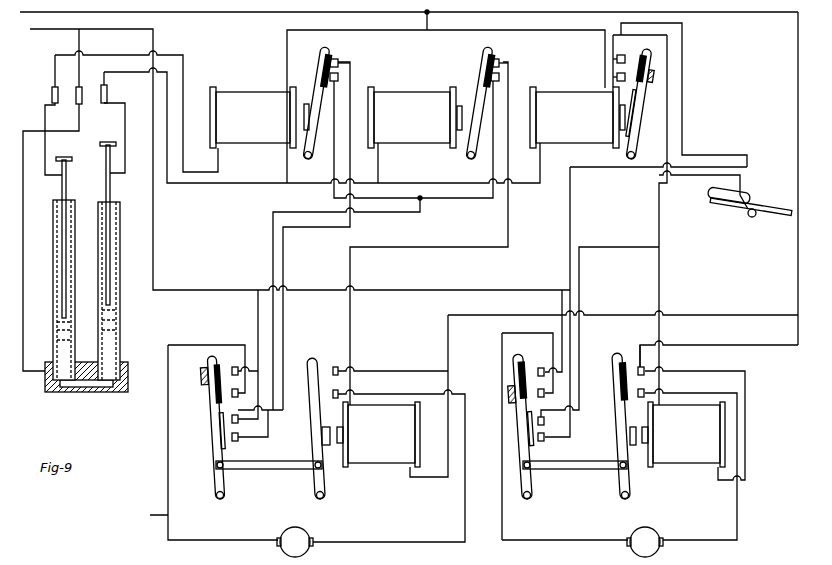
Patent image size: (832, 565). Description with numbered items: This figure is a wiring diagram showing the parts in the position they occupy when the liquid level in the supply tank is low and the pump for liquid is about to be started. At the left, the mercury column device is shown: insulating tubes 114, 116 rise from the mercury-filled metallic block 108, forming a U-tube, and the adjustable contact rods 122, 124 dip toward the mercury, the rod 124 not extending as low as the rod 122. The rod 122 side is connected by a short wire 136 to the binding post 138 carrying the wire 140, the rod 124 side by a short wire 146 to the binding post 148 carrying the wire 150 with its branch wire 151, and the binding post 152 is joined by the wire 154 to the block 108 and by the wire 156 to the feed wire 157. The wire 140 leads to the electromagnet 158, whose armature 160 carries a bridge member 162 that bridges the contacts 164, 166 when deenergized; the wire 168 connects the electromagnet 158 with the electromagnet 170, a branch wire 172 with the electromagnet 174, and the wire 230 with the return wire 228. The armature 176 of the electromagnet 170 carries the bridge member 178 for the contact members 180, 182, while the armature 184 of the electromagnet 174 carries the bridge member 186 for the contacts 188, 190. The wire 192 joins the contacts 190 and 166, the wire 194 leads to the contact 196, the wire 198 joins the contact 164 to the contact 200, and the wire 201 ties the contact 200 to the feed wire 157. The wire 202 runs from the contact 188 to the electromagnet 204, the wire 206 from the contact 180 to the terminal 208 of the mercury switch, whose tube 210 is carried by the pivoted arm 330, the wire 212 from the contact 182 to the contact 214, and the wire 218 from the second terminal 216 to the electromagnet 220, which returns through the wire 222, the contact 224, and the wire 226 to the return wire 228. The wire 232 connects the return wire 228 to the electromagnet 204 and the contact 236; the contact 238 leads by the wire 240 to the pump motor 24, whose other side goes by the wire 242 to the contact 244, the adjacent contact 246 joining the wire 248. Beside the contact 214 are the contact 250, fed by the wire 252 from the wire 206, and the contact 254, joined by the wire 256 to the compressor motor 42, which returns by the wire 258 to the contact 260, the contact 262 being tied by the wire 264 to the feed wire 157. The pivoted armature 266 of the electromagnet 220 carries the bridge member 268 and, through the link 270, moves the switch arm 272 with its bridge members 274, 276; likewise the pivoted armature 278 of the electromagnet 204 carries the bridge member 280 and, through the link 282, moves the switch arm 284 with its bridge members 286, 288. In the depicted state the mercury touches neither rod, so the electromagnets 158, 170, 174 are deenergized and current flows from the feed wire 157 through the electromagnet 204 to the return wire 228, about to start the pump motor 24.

The pump motor 24 is at (307, 552).
The compressor motor 42 is at (649, 553).
The metallic block 108 is at (120, 389).
The tube 114 is at (54, 319).
The tube 116 is at (121, 316).
The contact rod 122 is at (62, 262).
The contact rod 124 is at (110, 276).
The wire 136 is at (46, 146).
The binding post 138 is at (52, 92).
The wire 140 is at (181, 60).
The wire 146 is at (106, 142).
The binding post 148 is at (107, 91).
The wire 150 is at (229, 184).
The branch wire 151 is at (379, 169).
The binding post 152 is at (80, 86).
The wire 154 is at (23, 131).
The wire 156 is at (81, 43).
The feed wire 157 is at (41, 30).
The electromagnet 158 is at (241, 100).
The armature 160 is at (318, 62).
The bridge member 162 is at (328, 52).
The contact 164 is at (339, 61).
The contact 166 is at (339, 76).
The wire 168 is at (558, 31).
The electromagnet 170 is at (551, 100).
The branch wire 172 is at (447, 56).
The electromagnet 174 is at (392, 100).
The armature 176 is at (641, 110).
The bridge member 178 is at (639, 58).
The contact member 180 is at (617, 58).
The contact member 182 is at (617, 77).
The armature 184 is at (479, 95).
The bridge member 186 is at (490, 54).
The contact 188 is at (500, 61).
The contact 190 is at (500, 76).
The wire 192 is at (455, 199).
The wire 194 is at (271, 248).
The contact 196 is at (239, 441).
The wire 198 is at (318, 229).
The contact 200 is at (269, 427).
The wire 201 is at (257, 301).
The wire 202 is at (471, 248).
The electromagnet 204 is at (396, 463).
The wire 206 is at (683, 77).
The terminal 208 is at (752, 204).
The tube 210 is at (711, 201).
The wire 212 is at (613, 247).
The contact 214 is at (546, 421).
The terminal 216 is at (747, 211).
The wire 218 is at (660, 283).
The electromagnet 220 is at (694, 463).
The wire 222 is at (746, 431).
The contact 224 is at (641, 366).
The wire 226 is at (773, 346).
The return wire 228 is at (749, 14).
The wire 230 is at (432, 21).
The wire 232 is at (722, 315).
The contact 236 is at (339, 369).
The contact 238 is at (339, 392).
The wire 240 is at (464, 518).
The wire 242 is at (196, 442).
The contact 244 is at (231, 388).
The contact 246 is at (237, 366).
The wire 248 is at (273, 335).
The contact 250 is at (545, 438).
The wire 252 is at (569, 229).
The contact 254 is at (520, 376).
The wire 256 is at (578, 541).
The wire 258 is at (738, 524).
The contact 260 is at (646, 392).
The contact 262 is at (546, 339).
The wire 264 is at (565, 346).
The armature 266 is at (633, 458).
The bridge member 268 is at (624, 362).
The link 270 is at (584, 470).
The switch arm 272 is at (521, 445).
The bridge member 274 is at (518, 356).
The bridge member 276 is at (531, 428).
The armature 278 is at (326, 480).
The bridge member 280 is at (309, 361).
The link 282 is at (251, 469).
The switch arm 284 is at (213, 455).
The bridge member 286 is at (219, 405).
The bridge member 288 is at (223, 428).
The arm 330 is at (781, 216).